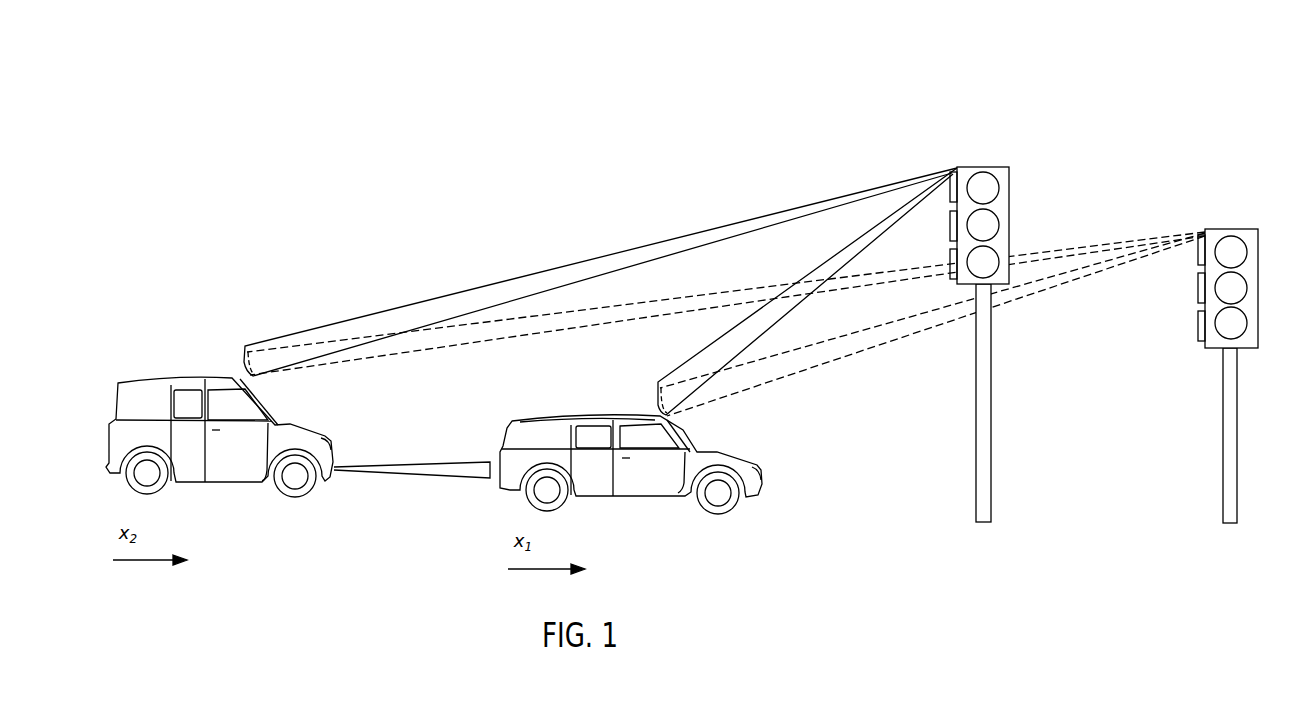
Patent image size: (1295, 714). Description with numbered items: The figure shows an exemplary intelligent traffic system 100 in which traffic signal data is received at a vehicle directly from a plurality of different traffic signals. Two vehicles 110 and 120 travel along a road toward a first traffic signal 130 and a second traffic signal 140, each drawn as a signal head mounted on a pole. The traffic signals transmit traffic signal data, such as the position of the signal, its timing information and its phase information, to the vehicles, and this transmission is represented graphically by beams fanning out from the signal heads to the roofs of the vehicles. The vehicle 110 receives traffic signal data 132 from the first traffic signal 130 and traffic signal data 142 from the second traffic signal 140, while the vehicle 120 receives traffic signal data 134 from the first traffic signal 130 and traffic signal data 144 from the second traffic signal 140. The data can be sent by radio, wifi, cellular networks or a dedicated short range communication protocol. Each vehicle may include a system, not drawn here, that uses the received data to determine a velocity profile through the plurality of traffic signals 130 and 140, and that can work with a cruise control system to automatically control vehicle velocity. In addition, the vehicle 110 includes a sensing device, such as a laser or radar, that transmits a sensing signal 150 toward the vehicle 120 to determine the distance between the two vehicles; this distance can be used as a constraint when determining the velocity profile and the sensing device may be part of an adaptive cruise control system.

The intelligent traffic system 100 is at (709, 110).
The vehicle 110 is at (149, 382).
The vehicle 120 is at (504, 420).
The first traffic signal 130 is at (983, 166).
The traffic signal data 132 is at (392, 311).
The traffic signal data 134 is at (853, 238).
The second traffic signal 140 is at (1243, 228).
The traffic signal data 142 is at (1090, 243).
The traffic signal data 144 is at (857, 348).
The sensing signal 150 is at (410, 468).